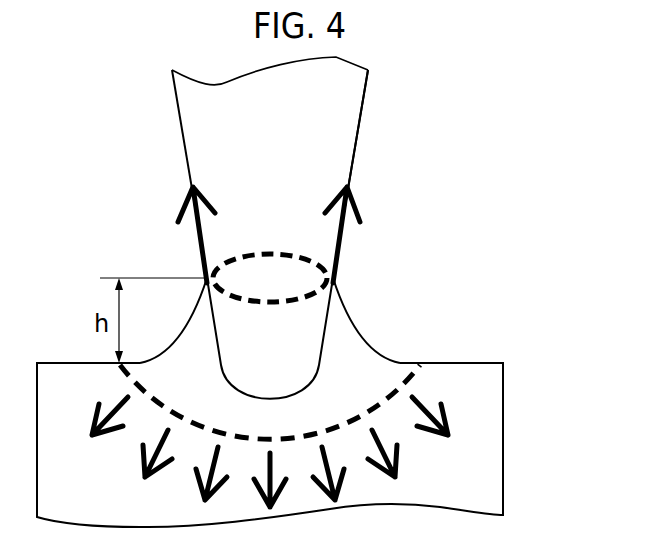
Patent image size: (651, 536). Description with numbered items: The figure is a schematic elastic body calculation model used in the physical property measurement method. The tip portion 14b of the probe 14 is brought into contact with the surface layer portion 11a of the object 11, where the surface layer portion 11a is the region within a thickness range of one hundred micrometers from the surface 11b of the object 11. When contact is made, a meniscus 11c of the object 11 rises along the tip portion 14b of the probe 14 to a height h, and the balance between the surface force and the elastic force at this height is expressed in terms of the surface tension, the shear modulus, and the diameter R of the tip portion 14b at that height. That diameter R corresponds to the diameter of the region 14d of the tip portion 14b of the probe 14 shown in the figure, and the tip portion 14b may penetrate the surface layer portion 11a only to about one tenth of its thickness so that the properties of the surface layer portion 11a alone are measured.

The probe 14 is at (157, 113).
The tip portion 14b is at (336, 125).
The region 14d is at (300, 280).
The object 11 is at (517, 361).
The surface layer portion 11a is at (469, 453).
The surface 11b is at (470, 363).
The meniscus 11c is at (353, 347).